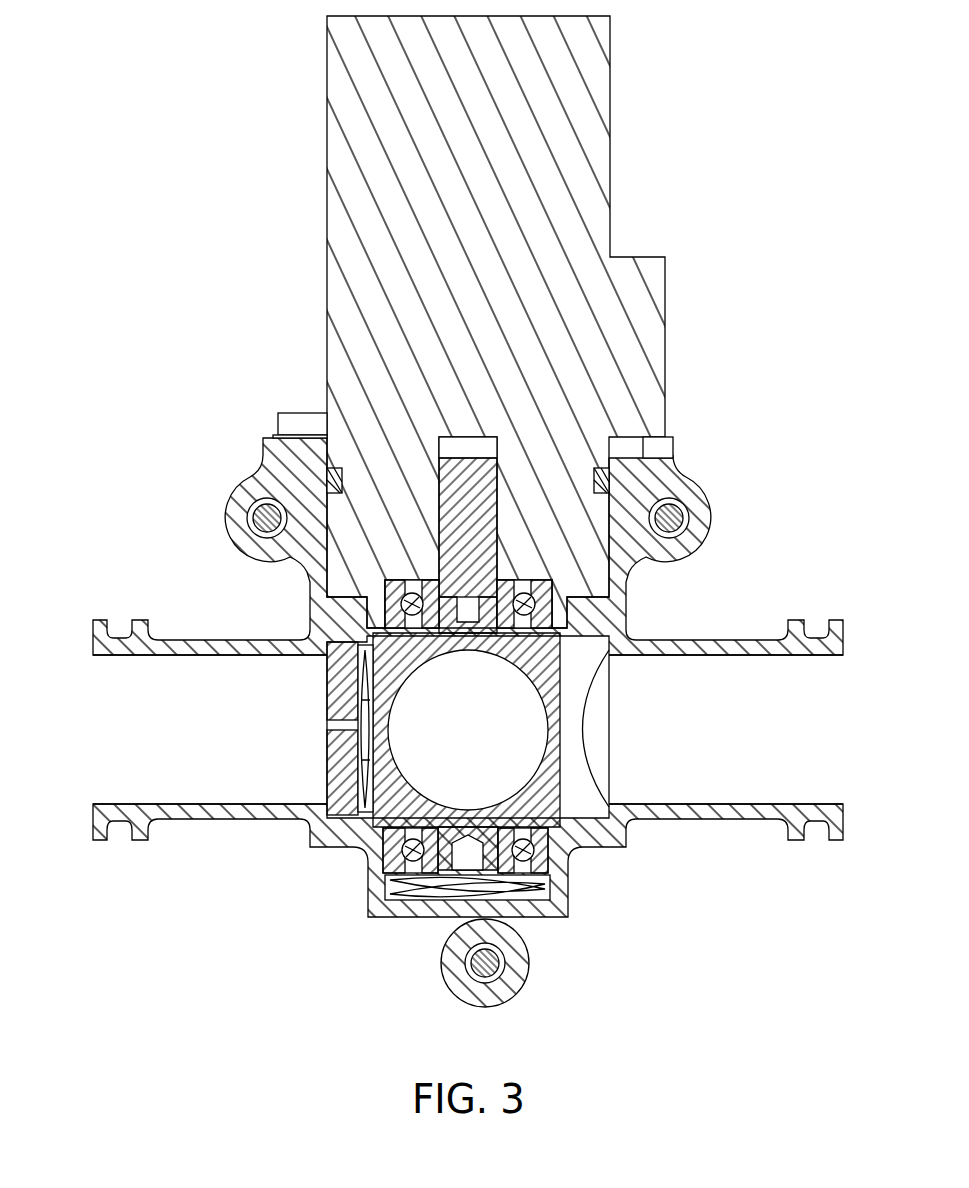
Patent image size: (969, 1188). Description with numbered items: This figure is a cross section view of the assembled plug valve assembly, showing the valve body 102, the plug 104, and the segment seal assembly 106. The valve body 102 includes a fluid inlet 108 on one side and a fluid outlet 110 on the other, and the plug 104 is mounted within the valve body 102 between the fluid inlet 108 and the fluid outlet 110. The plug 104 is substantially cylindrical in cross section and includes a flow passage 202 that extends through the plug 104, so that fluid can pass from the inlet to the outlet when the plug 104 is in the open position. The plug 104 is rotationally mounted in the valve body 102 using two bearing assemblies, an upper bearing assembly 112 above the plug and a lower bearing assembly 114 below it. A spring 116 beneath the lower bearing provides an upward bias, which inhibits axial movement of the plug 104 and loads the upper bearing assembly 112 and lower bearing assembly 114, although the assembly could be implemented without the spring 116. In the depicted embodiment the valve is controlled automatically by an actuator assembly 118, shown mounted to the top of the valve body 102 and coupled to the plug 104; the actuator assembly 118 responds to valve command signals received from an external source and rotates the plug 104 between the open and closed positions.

The valve body 102 is at (700, 626).
The plug 104 is at (566, 788).
The segment seal assembly 106 is at (302, 705).
The fluid inlet 108 is at (837, 708).
The fluid outlet 110 is at (92, 710).
The upper bearing assembly 112 is at (543, 593).
The lower bearing assembly 114 is at (543, 860).
The spring 116 is at (553, 892).
The actuator assembly 118 is at (688, 285).
The flow passage 202 is at (443, 744).